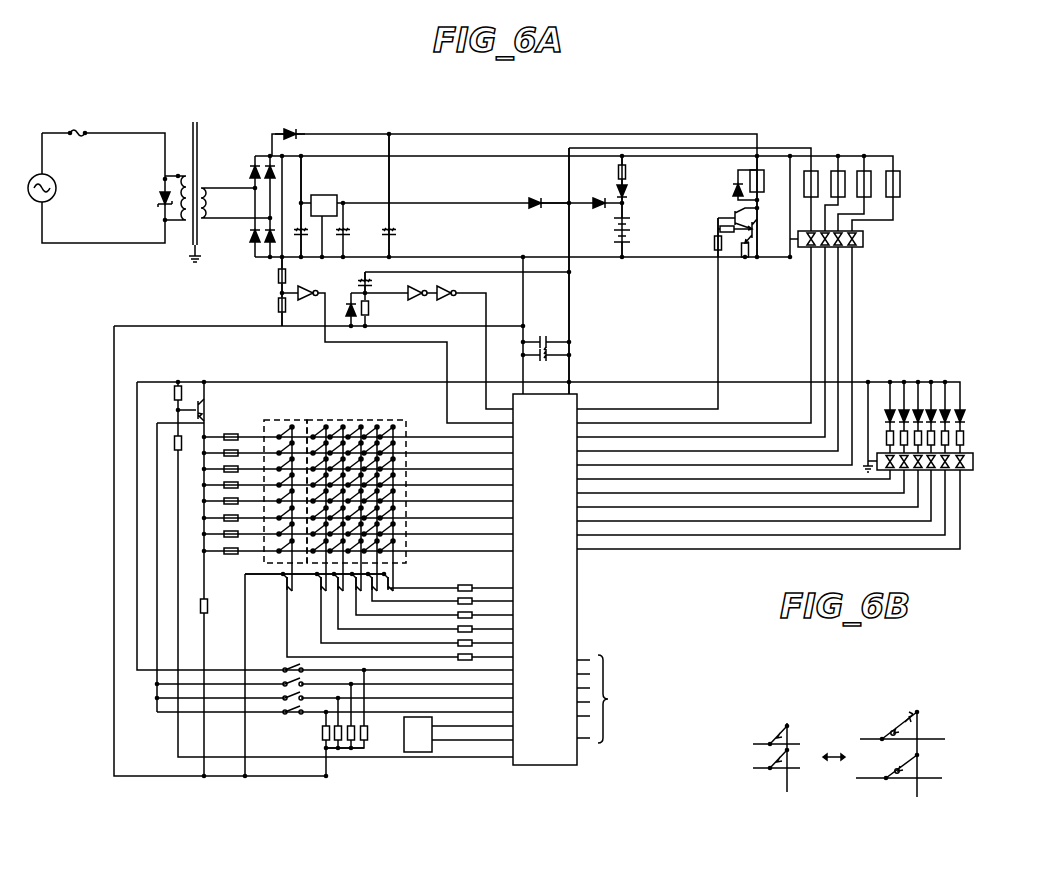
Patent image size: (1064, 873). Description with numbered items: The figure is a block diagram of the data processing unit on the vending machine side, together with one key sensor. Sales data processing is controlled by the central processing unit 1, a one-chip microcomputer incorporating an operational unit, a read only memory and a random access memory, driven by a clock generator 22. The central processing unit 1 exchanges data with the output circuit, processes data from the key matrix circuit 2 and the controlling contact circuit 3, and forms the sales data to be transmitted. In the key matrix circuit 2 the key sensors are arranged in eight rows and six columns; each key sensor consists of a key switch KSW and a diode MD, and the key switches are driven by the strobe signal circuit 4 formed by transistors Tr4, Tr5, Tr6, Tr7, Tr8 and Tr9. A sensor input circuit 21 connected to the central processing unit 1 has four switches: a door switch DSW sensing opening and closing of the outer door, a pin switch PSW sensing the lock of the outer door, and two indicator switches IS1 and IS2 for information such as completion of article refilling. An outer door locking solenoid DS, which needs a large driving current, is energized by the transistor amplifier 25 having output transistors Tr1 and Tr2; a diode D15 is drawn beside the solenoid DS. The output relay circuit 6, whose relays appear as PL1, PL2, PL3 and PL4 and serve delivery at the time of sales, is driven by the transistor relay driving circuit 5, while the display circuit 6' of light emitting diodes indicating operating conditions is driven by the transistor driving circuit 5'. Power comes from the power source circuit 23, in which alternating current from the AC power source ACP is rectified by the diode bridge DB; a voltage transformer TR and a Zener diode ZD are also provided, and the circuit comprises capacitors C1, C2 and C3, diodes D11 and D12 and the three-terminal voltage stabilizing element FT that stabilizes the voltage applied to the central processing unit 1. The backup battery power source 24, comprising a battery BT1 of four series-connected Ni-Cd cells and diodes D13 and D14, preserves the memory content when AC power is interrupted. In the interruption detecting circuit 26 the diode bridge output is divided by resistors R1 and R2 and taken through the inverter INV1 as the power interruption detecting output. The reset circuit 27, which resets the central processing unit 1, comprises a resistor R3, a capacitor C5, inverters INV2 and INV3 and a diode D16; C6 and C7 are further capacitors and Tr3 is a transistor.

In FIG. 6A, the central processing unit 1 is at (577, 400).
In FIG. 6A, the key matrix circuit 2 is at (396, 420).
In FIG. 6A, the controlling contact circuit 3 is at (276, 420).
In FIG. 6A, the strobe signal circuit 4 is at (418, 589).
In FIG. 6A, the transistor relay driving circuit 5 is at (733, 348).
In FIG. 6A, the transistor driving circuit 5' is at (805, 465).
In FIG. 6A, the output relay circuit 6 is at (864, 185).
In FIG. 6A, the display circuit 6' is at (915, 404).
In FIG. 6A, the sensor input circuit 21 is at (283, 673).
In FIG. 6A, the clock generator 22 is at (404, 746).
In FIG. 6A, the power source circuit 23 is at (374, 195).
In FIG. 6A, the backup battery power source 24 is at (589, 271).
In FIG. 6A, the transistor amplifier 25 is at (742, 239).
In FIG. 6A, the interruption detecting circuit 26 is at (237, 291).
In FIG. 6A, the reset circuit 27 is at (382, 323).
In FIG. 6A, the AC power source ACP is at (96, 186).
In FIG. 6A, the voltage transformer TR is at (218, 192).
In FIG. 6A, the Zener diode ZD is at (146, 200).
In FIG. 6A, the diode bridge DB is at (246, 206).
In FIG. 6A, the diode D11 is at (303, 125).
In FIG. 6A, the three-terminal voltage stabilizing element FT is at (326, 197).
In FIG. 6A, the capacitor C1 is at (311, 240).
In FIG. 6A, the capacitor C2 is at (352, 225).
In FIG. 6A, the capacitor C3 is at (401, 234).
In FIG. 6A, the capacitor C5 is at (372, 282).
In FIG. 6A, the capacitor C6 is at (548, 364).
In FIG. 6A, the capacitor C7 is at (546, 332).
In FIG. 6A, the resistor R1 is at (278, 278).
In FIG. 6A, the resistor R2 is at (278, 304).
In FIG. 6A, the resistor R3 is at (381, 310).
In FIG. 6A, the inverter INV1 is at (303, 305).
In FIG. 6A, the inverter INV2 is at (410, 305).
In FIG. 6A, the inverter INV3 is at (445, 284).
In FIG. 6A, the diode D12 is at (530, 191).
In FIG. 6A, the diode D13 is at (595, 191).
In FIG. 6A, the diode D14 is at (641, 185).
In FIG. 6A, the diode D15 is at (730, 185).
In FIG. 6A, the diode D16 is at (347, 316).
In FIG. 6A, the battery BT1 is at (639, 236).
In FIG. 6A, the outer door locking solenoid DS is at (762, 181).
In FIG. 6A, the output transistor Tr1 is at (724, 219).
In FIG. 6A, the output transistor Tr2 is at (760, 240).
In FIG. 6A, the transistor Tr3 is at (207, 418).
In FIG. 6A, the transistor Tr4 is at (388, 616).
In FIG. 6A, the transistor Tr5 is at (403, 609).
In FIG. 6A, the transistor Tr6 is at (418, 602).
In FIG. 6A, the transistor Tr7 is at (427, 595).
In FIG. 6A, the transistor Tr8 is at (436, 588).
In FIG. 6A, the transistor Tr9 is at (445, 588).
In FIG. 6A, the pilot lamp PL1 is at (811, 201).
In FIG. 6A, the pilot lamp PL2 is at (835, 193).
In FIG. 6A, the pilot lamp PL3 is at (854, 193).
In FIG. 6A, the pilot lamp PL4 is at (876, 201).
In FIG. 6A, the door switch DSW is at (325, 565).
In FIG. 6A, the pin switch PSW is at (334, 712).
In FIG. 6A, the indicator switch IS1 is at (334, 719).
In FIG. 6A, the indicator switch IS2 is at (335, 739).
In FIG. 6B, the key switch KSW is at (849, 751).
In FIG. 6B, the diode MD is at (900, 713).